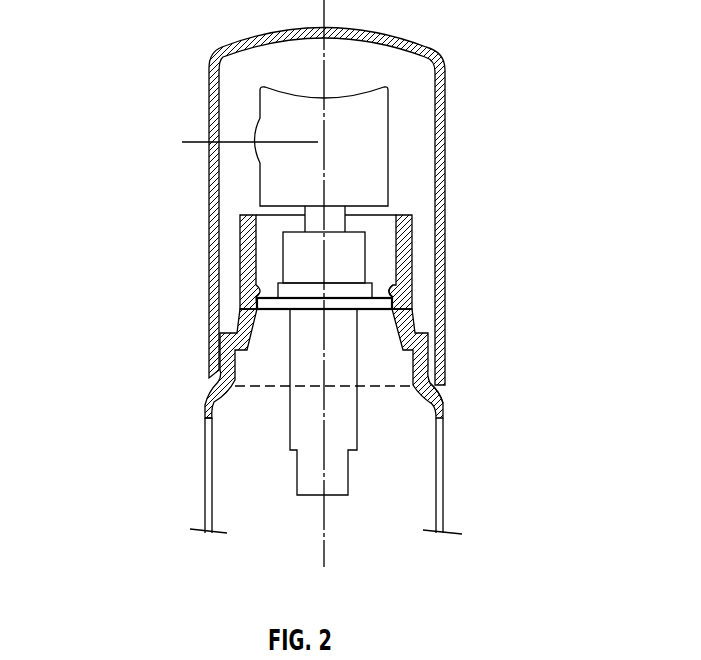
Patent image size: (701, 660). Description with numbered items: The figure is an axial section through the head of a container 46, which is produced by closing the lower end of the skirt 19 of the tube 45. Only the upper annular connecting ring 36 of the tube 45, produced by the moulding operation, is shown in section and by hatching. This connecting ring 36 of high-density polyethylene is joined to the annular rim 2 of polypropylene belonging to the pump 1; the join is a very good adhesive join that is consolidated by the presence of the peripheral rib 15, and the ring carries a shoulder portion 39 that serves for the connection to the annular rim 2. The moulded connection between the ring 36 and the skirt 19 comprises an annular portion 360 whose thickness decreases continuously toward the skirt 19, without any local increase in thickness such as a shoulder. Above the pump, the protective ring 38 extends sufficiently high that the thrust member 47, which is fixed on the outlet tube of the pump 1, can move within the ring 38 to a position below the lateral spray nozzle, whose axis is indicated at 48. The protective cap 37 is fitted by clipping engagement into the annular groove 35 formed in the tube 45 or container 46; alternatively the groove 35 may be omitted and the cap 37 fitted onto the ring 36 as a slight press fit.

The pump 1 is at (303, 404).
The annular rim 2 is at (267, 310).
The peripheral rib 15 is at (270, 303).
The skirt 19 is at (208, 475).
The groove 35 is at (324, 447).
The connecting ring 36 is at (403, 341).
The cap 37 is at (439, 167).
The protective ring 38 is at (402, 247).
The shoulder portion 39 is at (390, 297).
The tube 45 is at (138, 420).
The container 46 is at (195, 418).
The thrust member 47 is at (370, 142).
The axis of the lateral spray nozzle 48 is at (237, 142).
The annular portion 360 is at (445, 398).